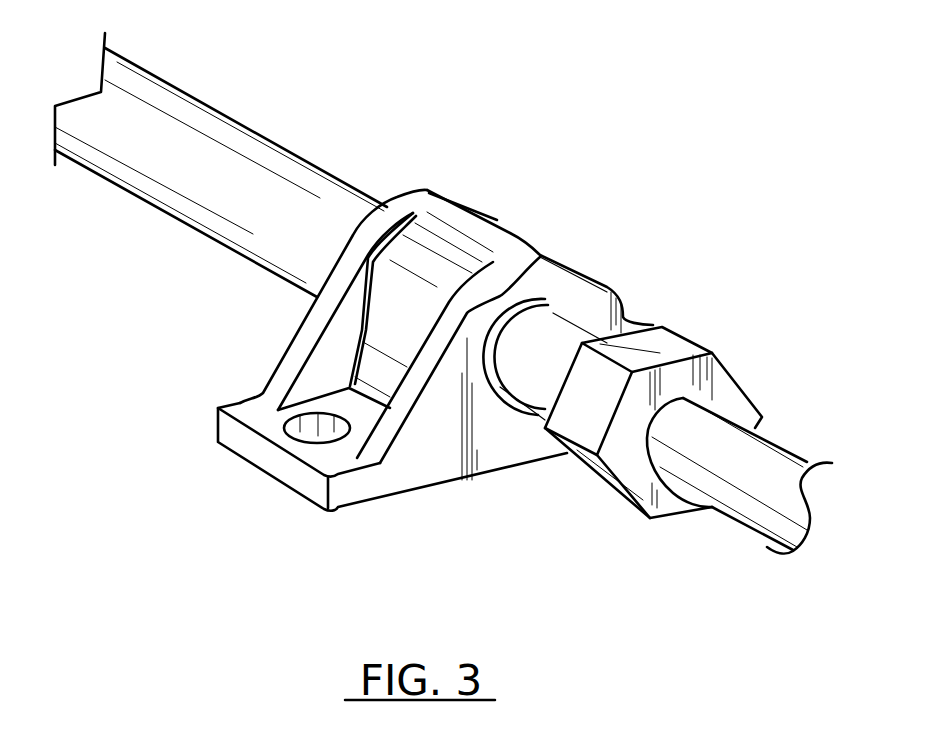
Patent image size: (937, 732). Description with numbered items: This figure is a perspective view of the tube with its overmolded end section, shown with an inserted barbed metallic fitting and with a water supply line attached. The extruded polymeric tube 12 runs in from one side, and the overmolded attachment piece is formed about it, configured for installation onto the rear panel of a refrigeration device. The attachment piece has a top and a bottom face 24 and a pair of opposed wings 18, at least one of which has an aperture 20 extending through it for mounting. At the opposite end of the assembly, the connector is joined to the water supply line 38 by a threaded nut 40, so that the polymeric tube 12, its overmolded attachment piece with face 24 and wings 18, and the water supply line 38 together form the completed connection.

The extruded polymeric tube 12 is at (210, 107).
The wings 18 is at (328, 470).
The aperture 20 is at (288, 420).
The face 24 is at (405, 472).
The water supply line 38 is at (712, 507).
The threaded nut 40 is at (730, 370).